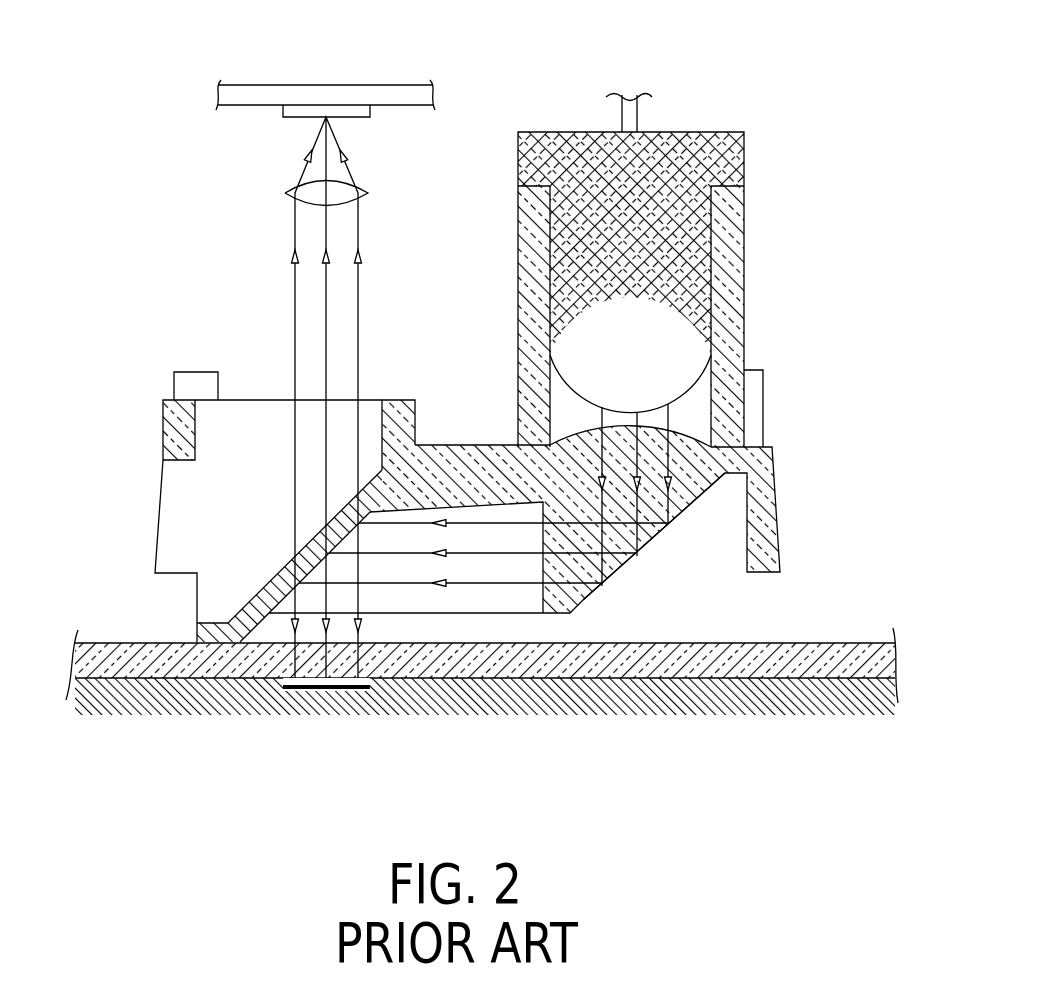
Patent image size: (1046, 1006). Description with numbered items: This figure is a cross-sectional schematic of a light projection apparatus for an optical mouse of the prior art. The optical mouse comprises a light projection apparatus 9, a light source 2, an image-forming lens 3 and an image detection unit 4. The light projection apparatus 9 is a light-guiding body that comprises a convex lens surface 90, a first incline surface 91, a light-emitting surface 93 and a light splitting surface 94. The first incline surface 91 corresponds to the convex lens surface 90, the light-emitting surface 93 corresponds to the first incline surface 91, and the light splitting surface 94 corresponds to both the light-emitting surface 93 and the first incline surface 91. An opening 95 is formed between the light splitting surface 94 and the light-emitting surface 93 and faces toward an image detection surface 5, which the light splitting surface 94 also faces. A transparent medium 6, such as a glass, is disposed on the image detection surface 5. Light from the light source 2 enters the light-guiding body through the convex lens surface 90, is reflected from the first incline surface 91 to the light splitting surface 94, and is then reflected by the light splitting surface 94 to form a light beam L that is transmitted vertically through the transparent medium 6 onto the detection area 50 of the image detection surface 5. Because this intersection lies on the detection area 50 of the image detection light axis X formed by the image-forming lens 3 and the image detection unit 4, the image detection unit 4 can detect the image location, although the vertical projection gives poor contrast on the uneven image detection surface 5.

The light source 2 is at (665, 242).
The image-forming lens 3 is at (285, 193).
The image detection unit 4 is at (303, 110).
The image detection surface 5 is at (167, 692).
The transparent medium 6 is at (117, 660).
The light projection apparatus 9 is at (660, 448).
The detection area 50 is at (330, 600).
The convex lens surface 90 is at (655, 427).
The first incline surface 91 is at (660, 537).
The light-emitting surface 93 is at (543, 572).
The light splitting surface 94 is at (276, 612).
The opening 95 is at (443, 628).
The image detection light axis X is at (326, 313).
The light beam L is at (385, 700).